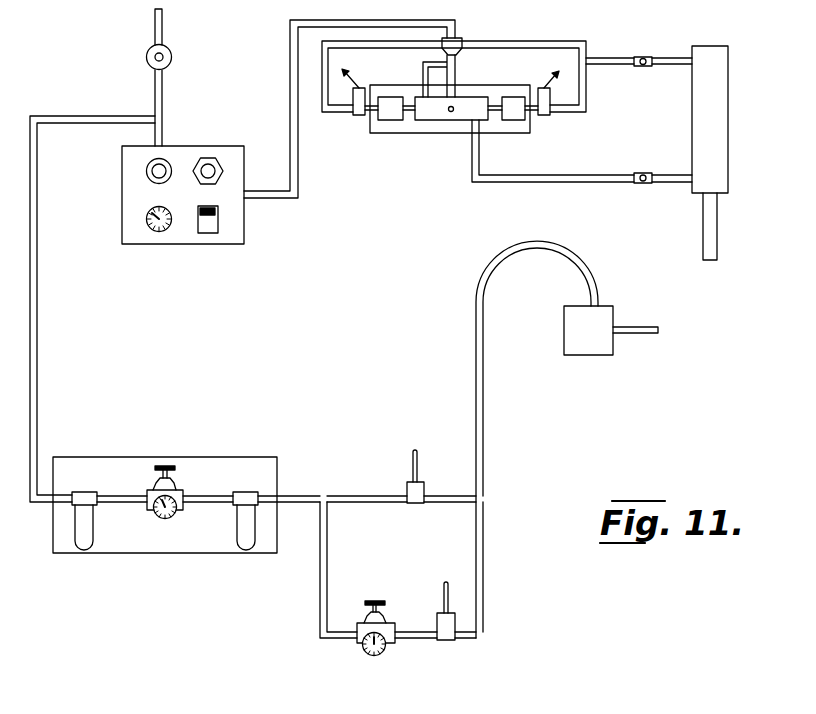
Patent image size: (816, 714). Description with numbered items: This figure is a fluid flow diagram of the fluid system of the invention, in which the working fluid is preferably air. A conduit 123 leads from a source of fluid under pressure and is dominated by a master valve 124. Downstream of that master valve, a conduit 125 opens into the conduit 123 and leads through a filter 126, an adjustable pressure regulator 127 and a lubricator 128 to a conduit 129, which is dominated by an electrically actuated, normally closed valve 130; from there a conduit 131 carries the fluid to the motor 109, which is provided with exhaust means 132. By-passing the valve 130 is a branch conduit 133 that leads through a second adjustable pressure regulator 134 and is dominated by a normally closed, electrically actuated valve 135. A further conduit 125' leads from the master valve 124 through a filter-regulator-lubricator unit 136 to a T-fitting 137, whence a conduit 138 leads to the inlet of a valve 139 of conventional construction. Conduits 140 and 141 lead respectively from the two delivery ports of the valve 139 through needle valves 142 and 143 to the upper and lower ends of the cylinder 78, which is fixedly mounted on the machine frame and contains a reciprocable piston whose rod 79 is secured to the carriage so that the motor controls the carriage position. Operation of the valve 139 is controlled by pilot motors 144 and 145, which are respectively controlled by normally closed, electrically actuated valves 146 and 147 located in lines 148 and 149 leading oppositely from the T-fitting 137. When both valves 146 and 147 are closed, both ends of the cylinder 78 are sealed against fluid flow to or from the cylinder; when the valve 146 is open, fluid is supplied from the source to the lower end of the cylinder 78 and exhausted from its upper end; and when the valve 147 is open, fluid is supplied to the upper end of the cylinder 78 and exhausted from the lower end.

The cylinder 78 is at (728, 103).
The rod 79 is at (717, 230).
The motor 109 is at (580, 355).
The conduit 123 is at (163, 22).
The master valve 124 is at (173, 52).
The conduit 125 is at (92, 309).
The further conduit 125' is at (349, 112).
The filter 126 is at (88, 546).
The adjustable pressure regulator 127 is at (167, 519).
The lubricator 128 is at (248, 546).
The conduit 129 is at (385, 494).
The valve 130 is at (417, 504).
The conduit 131 is at (483, 436).
The exhaust means 132 is at (651, 334).
The branch conduit 133 is at (328, 578).
The second adjustable pressure regulator 134 is at (374, 657).
The valve 135 is at (445, 641).
The filter-regulator-lubricator unit 136 is at (173, 245).
The T-fitting 137 is at (453, 42).
The conduit 138 is at (456, 74).
The valve 139 is at (442, 120).
The conduit 140 is at (536, 62).
The conduit 141 is at (541, 183).
The needle valve 142 is at (645, 67).
The needle valve 143 is at (642, 172).
The pilot motor 144 is at (390, 121).
The pilot motor 145 is at (513, 121).
The valve 146 is at (357, 116).
The valve 147 is at (544, 116).
The line 148 is at (388, 47).
The line 149 is at (586, 97).